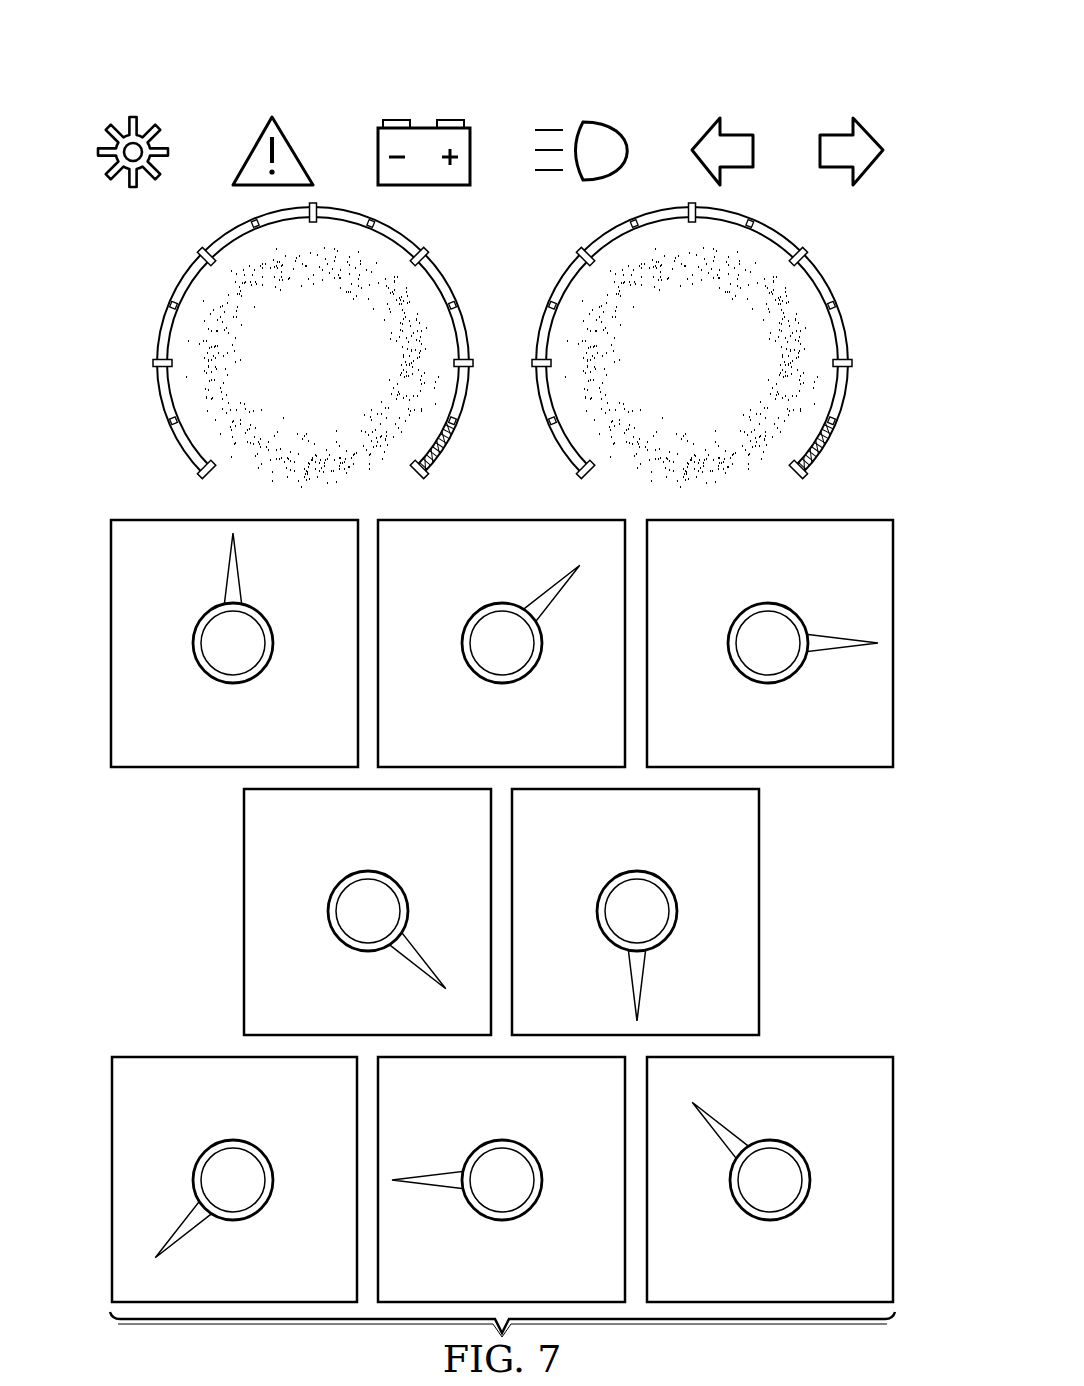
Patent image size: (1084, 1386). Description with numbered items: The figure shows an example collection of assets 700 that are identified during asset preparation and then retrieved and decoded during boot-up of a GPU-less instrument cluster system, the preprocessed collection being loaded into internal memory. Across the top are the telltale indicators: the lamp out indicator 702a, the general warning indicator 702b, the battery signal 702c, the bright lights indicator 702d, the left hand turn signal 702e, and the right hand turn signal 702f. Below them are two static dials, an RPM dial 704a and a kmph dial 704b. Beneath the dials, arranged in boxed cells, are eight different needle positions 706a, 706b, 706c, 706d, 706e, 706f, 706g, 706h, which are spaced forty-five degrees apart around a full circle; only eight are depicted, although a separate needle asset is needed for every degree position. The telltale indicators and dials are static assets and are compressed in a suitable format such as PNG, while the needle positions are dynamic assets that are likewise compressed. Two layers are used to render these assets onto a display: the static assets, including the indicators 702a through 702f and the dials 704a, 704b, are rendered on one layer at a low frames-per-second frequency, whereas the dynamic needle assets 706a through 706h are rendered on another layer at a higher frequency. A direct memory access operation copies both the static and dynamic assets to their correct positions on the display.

The collection of assets 700 is at (330, 57).
The lamp out indicator 702a is at (133, 117).
The general warning indicator 702b is at (272, 116).
The battery signal 702c is at (423, 128).
The bright lights indicator 702d is at (598, 121).
The left hand turn signal 702e is at (737, 135).
The right hand turn signal 702f is at (868, 132).
The RPM static dial 704a is at (150, 348).
The kmph static dial 704b is at (857, 346).
The needle position 706a is at (205, 735).
The needle position 706b is at (474, 735).
The needle position 706c is at (742, 735).
The needle position 706d is at (340, 841).
The needle position 706e is at (607, 841).
The needle position 706f is at (207, 1268).
The needle position 706g is at (474, 1268).
The needle position 706h is at (742, 1268).